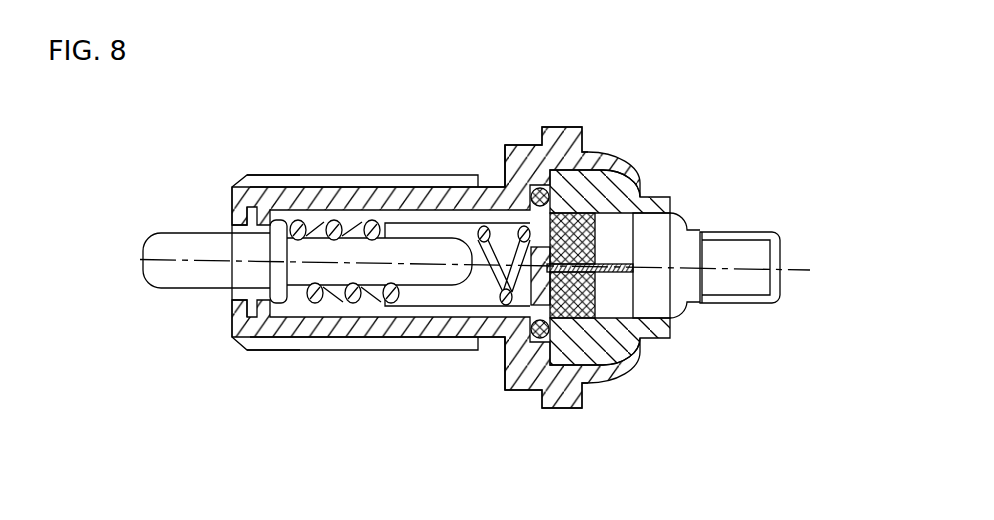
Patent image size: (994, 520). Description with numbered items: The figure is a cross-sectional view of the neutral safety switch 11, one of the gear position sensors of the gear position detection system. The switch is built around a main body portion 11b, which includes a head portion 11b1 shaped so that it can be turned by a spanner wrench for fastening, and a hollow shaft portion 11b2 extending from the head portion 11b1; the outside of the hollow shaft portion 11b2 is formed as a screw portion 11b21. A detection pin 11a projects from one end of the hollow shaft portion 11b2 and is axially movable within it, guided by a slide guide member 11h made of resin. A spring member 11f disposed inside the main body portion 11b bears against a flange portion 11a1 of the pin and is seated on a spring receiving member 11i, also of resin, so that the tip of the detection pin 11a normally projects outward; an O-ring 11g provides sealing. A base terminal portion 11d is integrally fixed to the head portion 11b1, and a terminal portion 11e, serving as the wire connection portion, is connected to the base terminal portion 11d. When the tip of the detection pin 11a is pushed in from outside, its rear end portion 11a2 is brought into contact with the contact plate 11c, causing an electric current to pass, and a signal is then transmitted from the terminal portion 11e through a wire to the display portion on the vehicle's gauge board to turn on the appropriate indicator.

The neutral safety switch 11 is at (409, 82).
The detection pin 11a is at (177, 270).
The flange portion 11a1 is at (249, 342).
The rear end portion 11a2 is at (435, 341).
The main body portion 11b is at (424, 187).
The head portion 11b1 is at (557, 142).
The hollow shaft portion 11b2 is at (373, 187).
The screw portion 11b21 is at (306, 184).
The contact plate 11c is at (495, 352).
The base terminal portion 11d is at (603, 347).
The terminal portion 11e is at (735, 282).
The spring member 11f is at (346, 305).
The O-ring 11g is at (542, 338).
The slide guide member 11h is at (230, 200).
The spring receiving member 11i is at (608, 172).